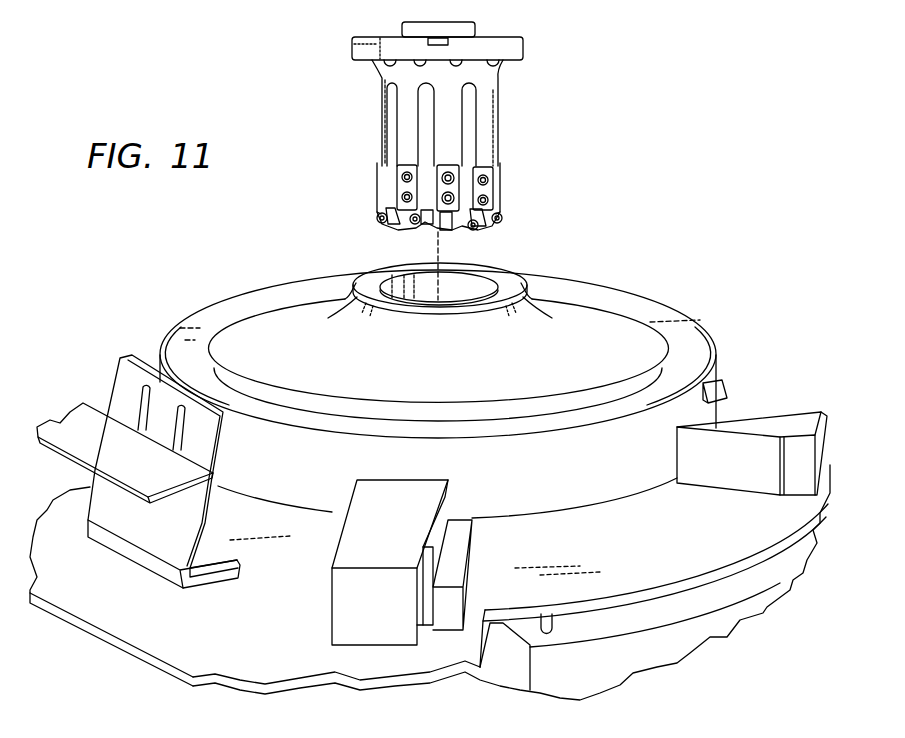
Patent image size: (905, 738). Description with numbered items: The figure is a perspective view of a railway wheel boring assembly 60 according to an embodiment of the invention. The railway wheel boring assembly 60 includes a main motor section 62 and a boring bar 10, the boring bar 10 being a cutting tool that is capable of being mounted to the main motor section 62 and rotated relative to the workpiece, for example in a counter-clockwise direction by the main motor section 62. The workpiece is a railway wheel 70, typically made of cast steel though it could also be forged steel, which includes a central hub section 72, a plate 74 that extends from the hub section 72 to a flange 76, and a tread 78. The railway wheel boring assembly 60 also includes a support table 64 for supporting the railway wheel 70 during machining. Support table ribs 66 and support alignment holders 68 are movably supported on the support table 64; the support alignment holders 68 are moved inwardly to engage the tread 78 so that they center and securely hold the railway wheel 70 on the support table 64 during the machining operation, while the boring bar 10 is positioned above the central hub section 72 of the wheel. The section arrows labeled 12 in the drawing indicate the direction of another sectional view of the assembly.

The boring bar 10 is at (291, 73).
The section line 12 is at (137, 340).
The railway wheel boring assembly 60 is at (522, 110).
The main motor section 62 is at (523, 48).
The support table 64 is at (732, 585).
The support table ribs 66 is at (474, 530).
The support alignment holders 68 is at (796, 410).
The railway wheel 70 is at (621, 251).
The central hub section 72 is at (345, 305).
The plate 74 is at (474, 286).
The flange 76 is at (716, 345).
The tread 78 is at (700, 410).